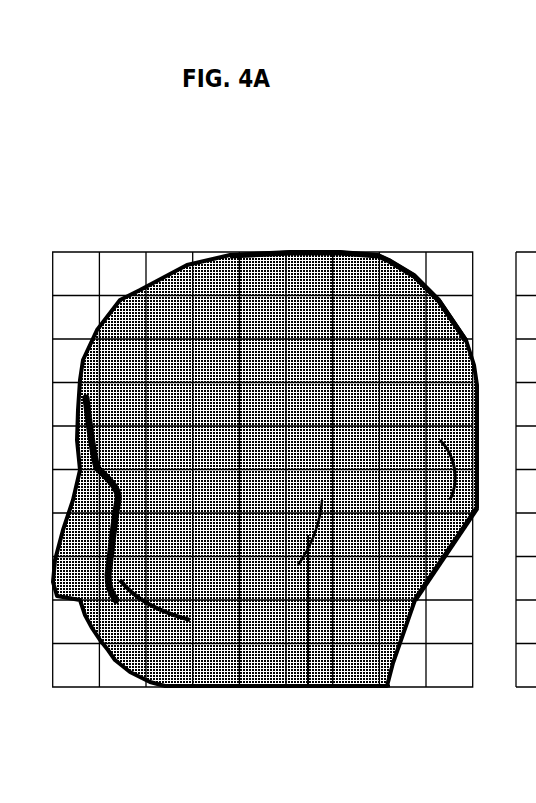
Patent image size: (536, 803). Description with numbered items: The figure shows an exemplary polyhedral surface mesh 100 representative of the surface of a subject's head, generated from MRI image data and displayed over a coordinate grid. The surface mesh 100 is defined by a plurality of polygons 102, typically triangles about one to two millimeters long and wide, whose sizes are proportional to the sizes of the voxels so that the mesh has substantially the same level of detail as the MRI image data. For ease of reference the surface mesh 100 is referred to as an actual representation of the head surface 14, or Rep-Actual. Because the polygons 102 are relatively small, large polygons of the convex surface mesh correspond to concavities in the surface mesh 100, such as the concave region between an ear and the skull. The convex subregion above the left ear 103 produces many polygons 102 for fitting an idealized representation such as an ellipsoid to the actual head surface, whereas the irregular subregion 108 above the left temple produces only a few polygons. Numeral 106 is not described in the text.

The head surface 14 is at (113, 312).
The polyhedral surface mesh 100 is at (347, 221).
The scalp surface of head model 106 is at (368, 263).
The irregular subregion 108 is at (465, 513).
The left ear 103 is at (308, 687).
The polygons 102 is at (342, 687).